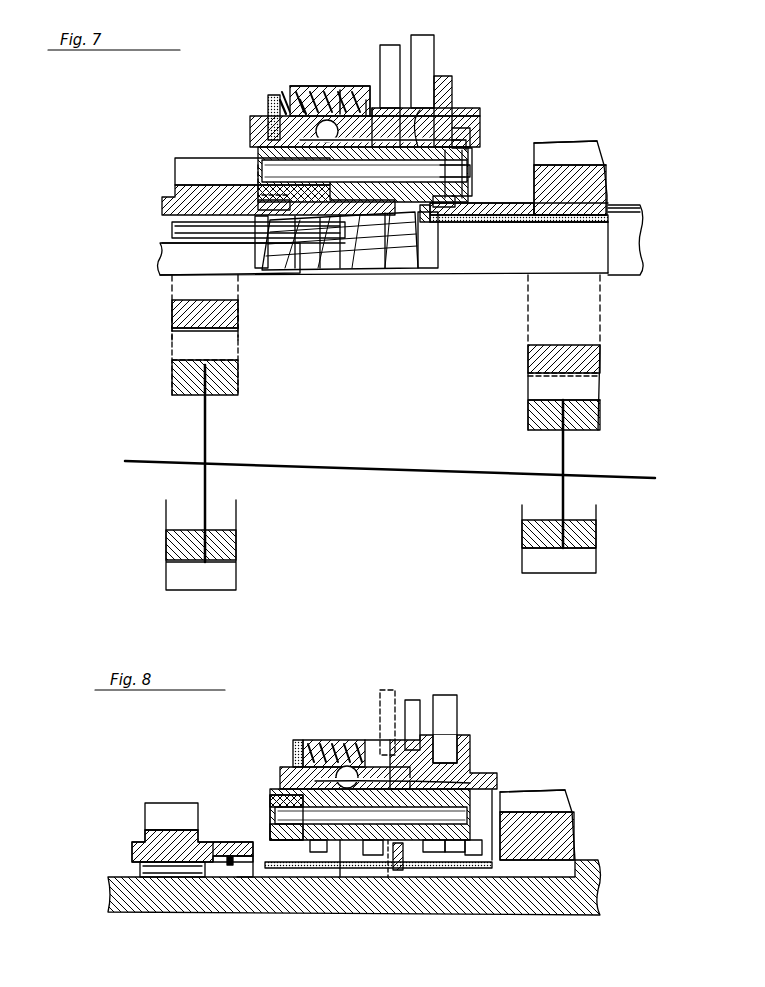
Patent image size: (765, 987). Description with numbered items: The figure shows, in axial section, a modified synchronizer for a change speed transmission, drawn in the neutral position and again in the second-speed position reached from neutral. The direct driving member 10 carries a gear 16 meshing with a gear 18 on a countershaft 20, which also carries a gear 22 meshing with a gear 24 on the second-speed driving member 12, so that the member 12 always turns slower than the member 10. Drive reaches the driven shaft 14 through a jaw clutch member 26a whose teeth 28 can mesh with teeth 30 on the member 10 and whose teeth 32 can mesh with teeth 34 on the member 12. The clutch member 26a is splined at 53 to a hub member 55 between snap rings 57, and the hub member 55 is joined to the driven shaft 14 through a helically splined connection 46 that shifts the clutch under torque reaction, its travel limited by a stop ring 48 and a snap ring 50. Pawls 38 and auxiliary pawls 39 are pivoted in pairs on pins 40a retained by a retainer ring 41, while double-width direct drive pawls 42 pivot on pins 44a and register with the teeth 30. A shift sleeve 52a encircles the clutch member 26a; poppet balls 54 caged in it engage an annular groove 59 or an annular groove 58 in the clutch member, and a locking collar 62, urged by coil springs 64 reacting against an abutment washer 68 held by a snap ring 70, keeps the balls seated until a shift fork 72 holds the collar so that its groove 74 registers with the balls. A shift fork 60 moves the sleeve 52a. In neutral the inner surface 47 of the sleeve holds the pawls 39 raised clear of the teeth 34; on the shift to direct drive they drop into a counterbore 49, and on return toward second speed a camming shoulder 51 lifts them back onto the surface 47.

In FIG. 7, the direct driving member 10 is at (162, 205).
In FIG. 8, the direct driving member 10 is at (132, 852).
In FIG. 7, the second-speed driving member 12 is at (590, 178).
In FIG. 8, the second-speed driving member 12 is at (560, 822).
In FIG. 7, the driven shaft 14 is at (628, 244).
In FIG. 8, the driven shaft 14 is at (598, 884).
In FIG. 7, the gear 16 is at (175, 160).
In FIG. 8, the gear 16 is at (165, 803).
In FIG. 7, the gear 18 is at (172, 378).
In FIG. 7, the countershaft 20 is at (373, 466).
In FIG. 7, the gear 22 is at (600, 410).
In FIG. 7, the gear 24 is at (596, 142).
In FIG. 8, the gear 24 is at (565, 790).
In FIG. 7, the jaw clutch member 26a is at (424, 268).
In FIG. 8, the jaw clutch member 26a is at (270, 877).
In FIG. 7, the jaw clutch teeth 28 is at (262, 268).
In FIG. 8, the jaw clutch teeth 28 is at (318, 852).
In FIG. 7, the jaw clutch teeth 30 is at (258, 185).
In FIG. 8, the jaw clutch teeth 30 is at (270, 830).
In FIG. 7, the jaw clutch teeth 32 is at (430, 220).
In FIG. 8, the jaw clutch teeth 32 is at (388, 877).
In FIG. 7, the jaw clutch teeth 34 is at (455, 200).
In FIG. 8, the jaw clutch teeth 34 is at (432, 852).
In FIG. 7, the pawls 38 is at (455, 215).
In FIG. 8, the pawls 38 is at (455, 852).
In FIG. 7, the auxiliary pawls 39 is at (468, 160).
In FIG. 8, the auxiliary pawls 39 is at (472, 855).
In FIG. 7, the pin 40a is at (470, 172).
In FIG. 7, the retainer ring 41 is at (468, 150).
In FIG. 7, the pawls 42 is at (262, 165).
In FIG. 8, the pawls 42 is at (296, 845).
In FIG. 8, the pins 44a is at (270, 803).
In FIG. 7, the helically splined connection 46 is at (360, 270).
In FIG. 7, the inner surface 47 is at (460, 138).
In FIG. 8, the stop ring 48 is at (230, 866).
In FIG. 7, the counterbore 49 is at (366, 100).
In FIG. 8, the snap ring 50 is at (398, 870).
In FIG. 7, the camming shoulder 51 is at (420, 110).
In FIG. 7, the shift sleeve 52a is at (452, 85).
In FIG. 8, the shift sleeve 52a is at (470, 745).
In FIG. 7, the splines 53 is at (340, 268).
In FIG. 8, the splines 53 is at (372, 855).
In FIG. 7, the poppet balls 54 is at (330, 90).
In FIG. 8, the poppet balls 54 is at (345, 762).
In FIG. 7, the hub member 55 is at (320, 268).
In FIG. 8, the hub member 55 is at (340, 877).
In FIG. 7, the snap rings 57 is at (295, 268).
In FIG. 7, the annular groove 58 is at (363, 174).
In FIG. 8, the annular groove 58 is at (470, 770).
In FIG. 7, the annular groove 59 is at (250, 128).
In FIG. 8, the annular groove 59 is at (280, 773).
In FIG. 7, the shift fork 60 is at (425, 45).
In FIG. 8, the shift fork 60 is at (448, 695).
In FIG. 7, the locking collar 62 is at (312, 85).
In FIG. 8, the locking collar 62 is at (312, 740).
In FIG. 7, the coil springs 64 is at (290, 100).
In FIG. 7, the abutment washer 68 is at (268, 100).
In FIG. 8, the snap ring 70 is at (293, 752).
In FIG. 7, the shift fork 72 is at (390, 45).
In FIG. 8, the shift fork 72 is at (410, 700).
In FIG. 7, the annular groove 74 is at (340, 90).